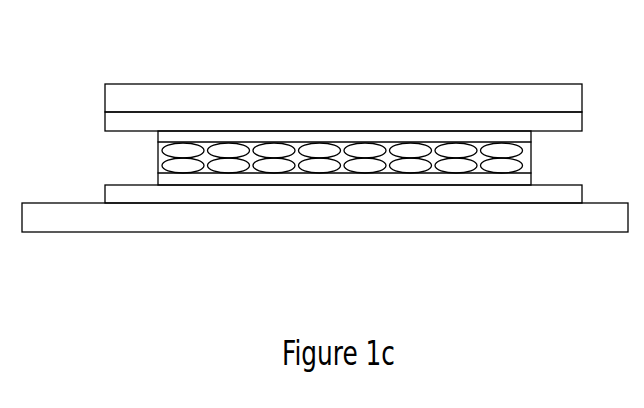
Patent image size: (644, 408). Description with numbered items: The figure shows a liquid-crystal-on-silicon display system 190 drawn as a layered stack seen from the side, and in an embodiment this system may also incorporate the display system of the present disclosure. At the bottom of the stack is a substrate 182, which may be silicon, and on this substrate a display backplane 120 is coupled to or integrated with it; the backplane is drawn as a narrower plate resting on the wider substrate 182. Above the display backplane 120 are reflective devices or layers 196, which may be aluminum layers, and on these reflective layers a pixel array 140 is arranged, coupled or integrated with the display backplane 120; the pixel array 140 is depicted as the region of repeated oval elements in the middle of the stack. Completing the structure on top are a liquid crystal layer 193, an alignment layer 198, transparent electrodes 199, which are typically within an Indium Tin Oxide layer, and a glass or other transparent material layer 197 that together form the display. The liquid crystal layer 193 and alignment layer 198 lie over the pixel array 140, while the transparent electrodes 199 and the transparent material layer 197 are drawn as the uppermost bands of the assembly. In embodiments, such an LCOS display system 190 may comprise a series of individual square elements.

The display backplane 120 is at (209, 195).
The pixel array 140 is at (286, 111).
The substrate 182 is at (68, 219).
The LCOS display system 190 is at (325, 265).
The liquid crystal layer 193 is at (183, 150).
The reflective devices or layers 196 is at (343, 168).
The glass or other transparent material layer 197 is at (463, 105).
The alignment layer 198 is at (274, 140).
The transparent electrodes 199 is at (562, 122).